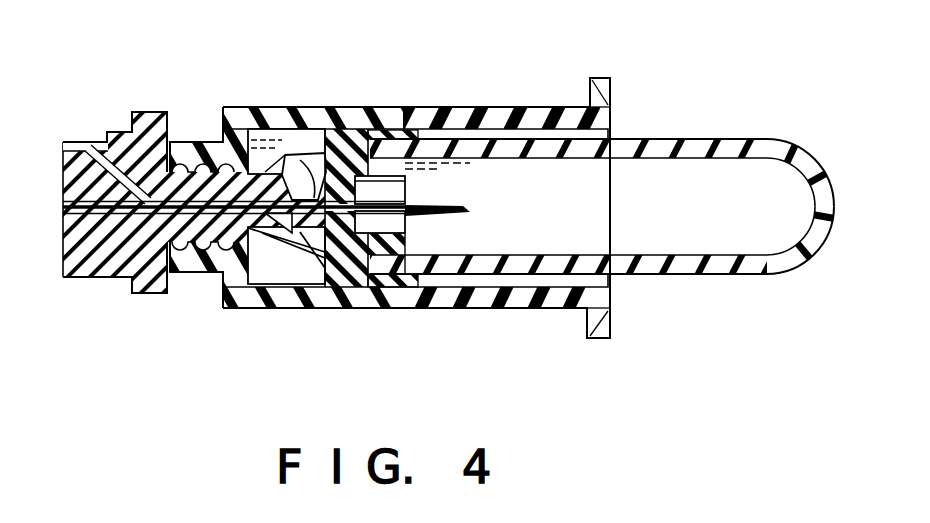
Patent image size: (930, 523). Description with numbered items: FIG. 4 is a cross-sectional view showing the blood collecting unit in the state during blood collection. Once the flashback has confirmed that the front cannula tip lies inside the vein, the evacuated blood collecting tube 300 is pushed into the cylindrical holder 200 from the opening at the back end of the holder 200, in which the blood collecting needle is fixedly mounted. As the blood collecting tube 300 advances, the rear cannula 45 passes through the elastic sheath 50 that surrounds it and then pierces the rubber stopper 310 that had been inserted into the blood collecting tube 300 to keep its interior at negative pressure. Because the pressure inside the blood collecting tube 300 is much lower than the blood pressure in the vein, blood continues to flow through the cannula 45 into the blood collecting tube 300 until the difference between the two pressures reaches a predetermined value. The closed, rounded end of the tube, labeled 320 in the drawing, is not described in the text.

The elastic sheath 50 is at (297, 108).
The cannula 45 is at (427, 206).
The holder 200 is at (460, 104).
The blood collecting tube 300 is at (709, 137).
The rubber stopper 310 is at (363, 290).
The tube bottom wall 320 is at (713, 274).